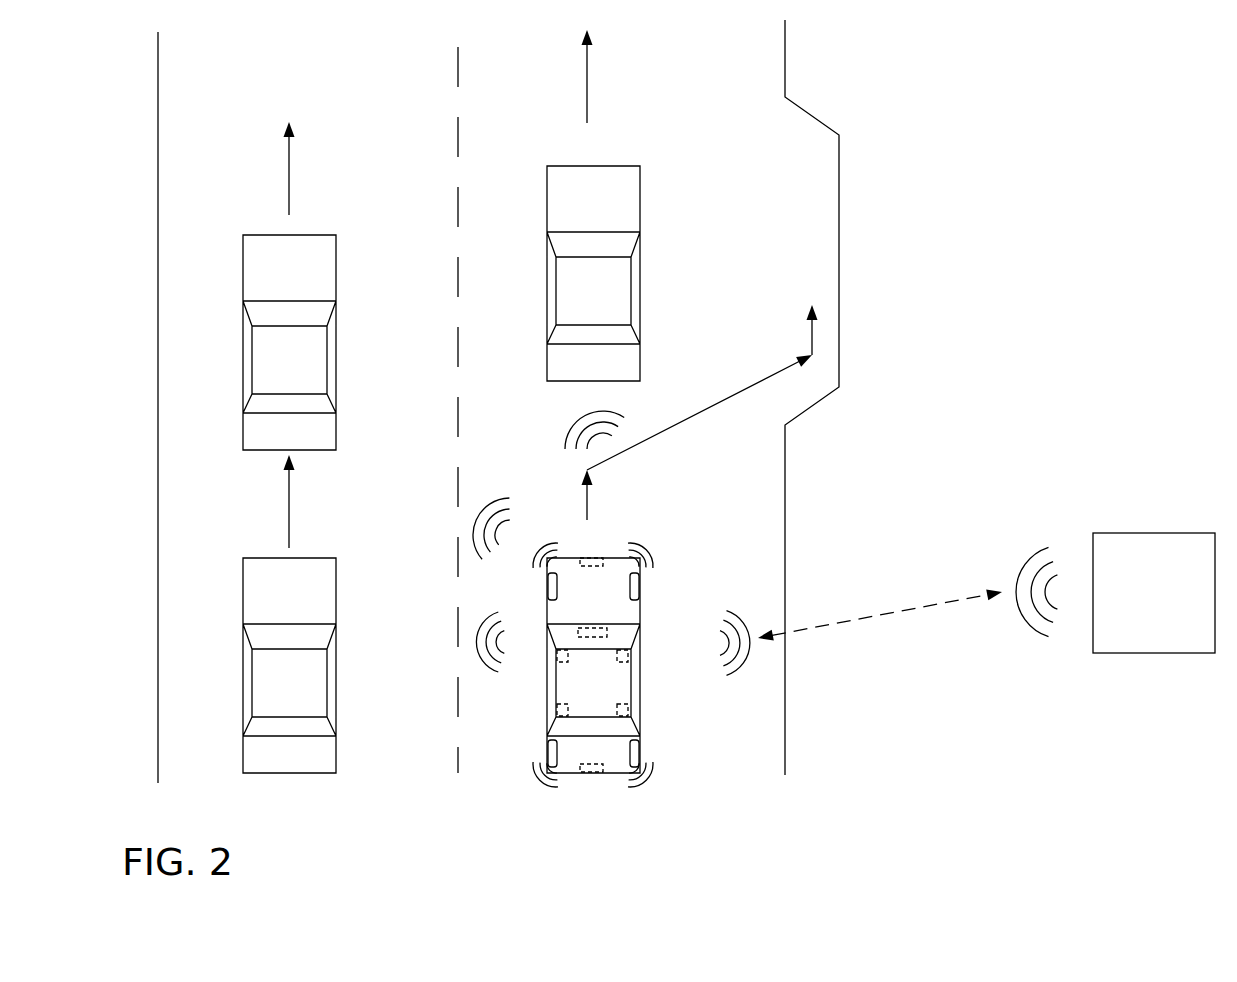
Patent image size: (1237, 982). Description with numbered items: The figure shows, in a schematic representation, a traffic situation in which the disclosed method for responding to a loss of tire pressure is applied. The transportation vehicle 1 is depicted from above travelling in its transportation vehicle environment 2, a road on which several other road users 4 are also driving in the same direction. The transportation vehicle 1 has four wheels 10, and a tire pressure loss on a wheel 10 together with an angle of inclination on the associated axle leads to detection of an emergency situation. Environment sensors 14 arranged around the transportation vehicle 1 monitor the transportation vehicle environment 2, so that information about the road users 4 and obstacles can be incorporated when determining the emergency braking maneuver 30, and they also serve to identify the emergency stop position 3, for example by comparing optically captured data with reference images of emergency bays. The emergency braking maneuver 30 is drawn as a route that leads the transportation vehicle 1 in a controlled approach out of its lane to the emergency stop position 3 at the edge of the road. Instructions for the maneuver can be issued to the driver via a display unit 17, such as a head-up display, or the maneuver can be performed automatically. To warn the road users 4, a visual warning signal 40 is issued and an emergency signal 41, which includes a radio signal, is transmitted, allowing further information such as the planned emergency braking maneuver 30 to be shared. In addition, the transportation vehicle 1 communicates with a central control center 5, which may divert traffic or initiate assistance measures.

The transportation vehicle 1 is at (622, 614).
The transportation vehicle environment 2 is at (470, 760).
The emergency stop position 3 is at (839, 229).
The road users 4 is at (320, 262).
The central control center 5 is at (1140, 606).
The wheel 10 is at (551, 581).
The environment sensors 14 is at (593, 558).
The display unit 17 is at (600, 634).
The emergency braking maneuver 30 is at (677, 423).
The visual warning signal 40 is at (672, 787).
The emergency signal 41 is at (641, 405).